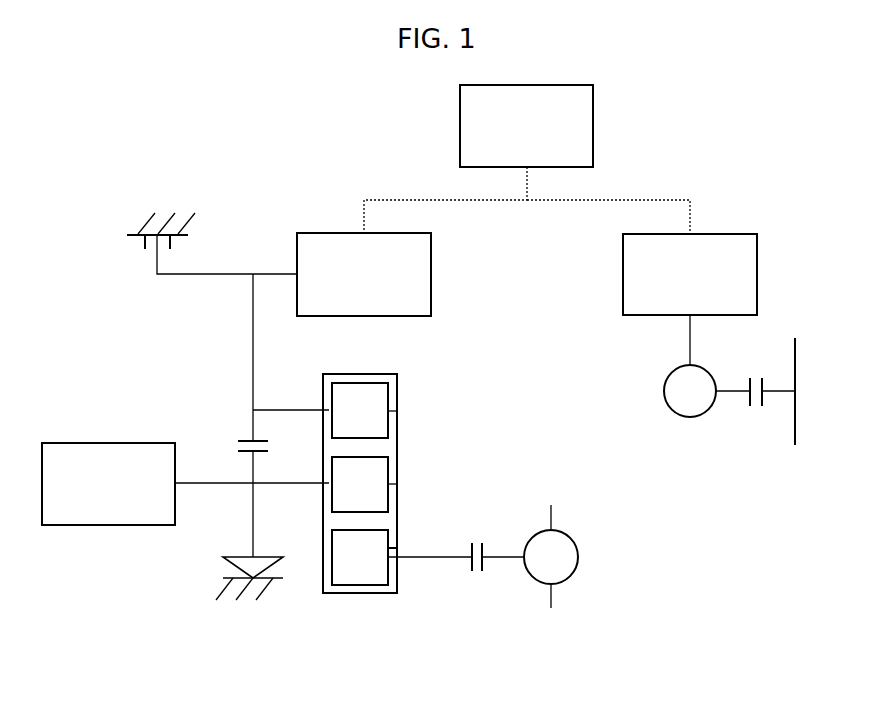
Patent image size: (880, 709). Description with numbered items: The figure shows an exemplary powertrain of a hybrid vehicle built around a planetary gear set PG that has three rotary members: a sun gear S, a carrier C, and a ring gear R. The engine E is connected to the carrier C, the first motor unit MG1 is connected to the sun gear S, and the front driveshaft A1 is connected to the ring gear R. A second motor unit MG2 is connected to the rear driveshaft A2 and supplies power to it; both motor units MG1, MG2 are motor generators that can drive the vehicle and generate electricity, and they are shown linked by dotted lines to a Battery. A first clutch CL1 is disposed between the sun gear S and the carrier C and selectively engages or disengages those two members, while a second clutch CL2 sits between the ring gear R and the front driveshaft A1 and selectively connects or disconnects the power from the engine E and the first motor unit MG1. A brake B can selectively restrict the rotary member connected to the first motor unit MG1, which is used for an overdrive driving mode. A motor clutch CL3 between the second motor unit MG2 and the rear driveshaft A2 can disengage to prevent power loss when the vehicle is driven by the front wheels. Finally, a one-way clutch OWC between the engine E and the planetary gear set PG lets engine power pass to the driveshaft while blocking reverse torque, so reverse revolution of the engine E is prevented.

The battery Battery is at (527, 159).
The first motor unit MG1 is at (324, 233).
The second motor unit MG2 is at (729, 234).
The brake B is at (158, 233).
The engine E is at (75, 443).
The first clutch CL1 is at (250, 438).
The second clutch CL2 is at (483, 566).
The motor clutch CL3 is at (748, 406).
The one-way clutch OWC is at (253, 582).
The planetary gear set PG is at (360, 595).
The sun gear S is at (398, 410).
The carrier C is at (398, 483).
The ring gear R is at (398, 547).
The front driveshaft A1 is at (552, 595).
The rear driveshaft A2 is at (796, 425).